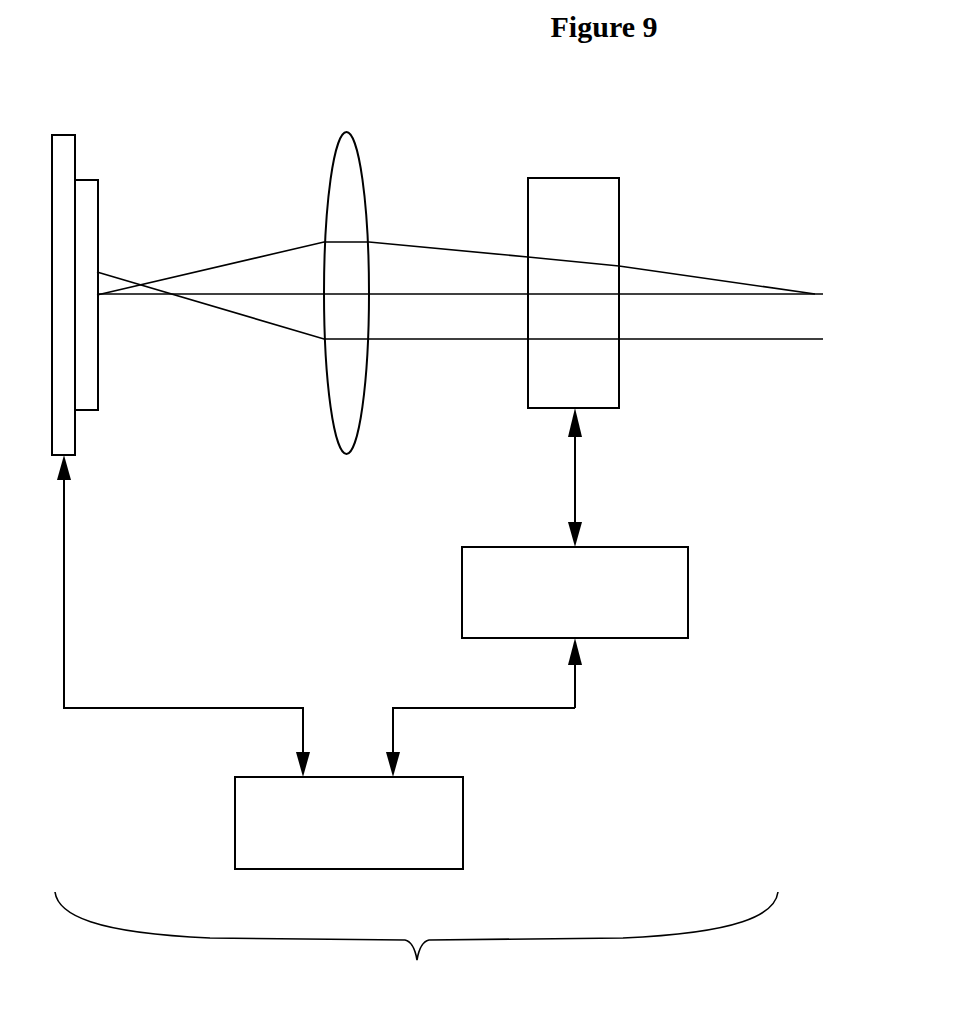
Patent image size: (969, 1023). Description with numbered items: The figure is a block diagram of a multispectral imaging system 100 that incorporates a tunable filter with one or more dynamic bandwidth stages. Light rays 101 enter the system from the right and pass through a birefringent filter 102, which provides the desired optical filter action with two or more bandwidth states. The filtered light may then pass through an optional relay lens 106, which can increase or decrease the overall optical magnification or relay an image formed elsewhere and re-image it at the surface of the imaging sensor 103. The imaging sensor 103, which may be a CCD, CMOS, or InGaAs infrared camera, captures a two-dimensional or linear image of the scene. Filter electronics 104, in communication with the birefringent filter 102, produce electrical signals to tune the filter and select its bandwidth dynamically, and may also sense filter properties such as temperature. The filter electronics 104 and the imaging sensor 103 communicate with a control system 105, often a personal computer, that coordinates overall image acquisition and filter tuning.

The multispectral imaging system 100 is at (416, 947).
The light rays 101 is at (776, 296).
The birefringent filter 102 is at (575, 178).
The imaging sensor 103 is at (98, 195).
The filter electronics 104 is at (627, 547).
The control system 105 is at (408, 777).
The relay lens 106 is at (360, 160).